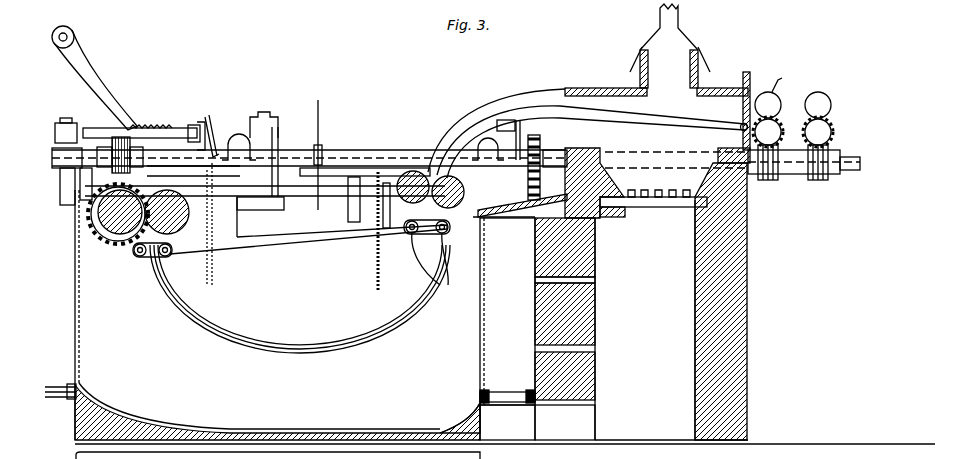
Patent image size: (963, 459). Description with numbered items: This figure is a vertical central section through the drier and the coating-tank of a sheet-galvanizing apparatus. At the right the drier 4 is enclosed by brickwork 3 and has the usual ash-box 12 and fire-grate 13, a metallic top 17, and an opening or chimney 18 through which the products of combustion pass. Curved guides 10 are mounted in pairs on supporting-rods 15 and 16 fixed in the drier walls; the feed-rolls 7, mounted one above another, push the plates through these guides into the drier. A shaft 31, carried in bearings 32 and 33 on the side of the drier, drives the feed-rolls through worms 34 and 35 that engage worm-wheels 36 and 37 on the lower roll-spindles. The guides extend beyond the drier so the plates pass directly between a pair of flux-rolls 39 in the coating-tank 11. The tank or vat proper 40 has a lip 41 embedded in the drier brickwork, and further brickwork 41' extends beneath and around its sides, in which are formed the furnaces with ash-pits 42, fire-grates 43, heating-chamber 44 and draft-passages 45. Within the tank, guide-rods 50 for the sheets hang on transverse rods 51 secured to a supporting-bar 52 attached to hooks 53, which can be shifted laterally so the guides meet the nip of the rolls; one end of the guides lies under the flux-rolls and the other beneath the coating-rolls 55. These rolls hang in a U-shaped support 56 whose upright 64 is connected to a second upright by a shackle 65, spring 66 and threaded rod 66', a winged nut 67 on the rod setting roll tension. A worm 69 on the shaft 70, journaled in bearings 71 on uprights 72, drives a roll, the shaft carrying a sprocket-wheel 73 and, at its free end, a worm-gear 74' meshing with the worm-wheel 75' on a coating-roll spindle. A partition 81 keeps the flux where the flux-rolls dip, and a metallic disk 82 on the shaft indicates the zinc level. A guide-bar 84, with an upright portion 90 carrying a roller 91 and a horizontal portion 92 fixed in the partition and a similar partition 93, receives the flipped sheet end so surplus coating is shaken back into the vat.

The brickwork 3 is at (538, 258).
The drier 4 is at (776, 325).
The feed-rolls 7 is at (815, 102).
The guides 10 is at (657, 122).
The coating-tank 11 is at (490, 324).
The ash-box 12 is at (671, 320).
The fire-grate 13 is at (655, 202).
The supporting-rod 15 is at (584, 112).
The supporting-rod 16 is at (740, 125).
The metallic top 17 is at (735, 108).
The opening or chimney 18 is at (670, 46).
The shaft 31 is at (850, 175).
The bearing 32 is at (546, 162).
The bearing 33 is at (789, 165).
The worm 34 is at (824, 178).
The worm 35 is at (758, 197).
The worm-wheel 36 is at (832, 129).
The worm-wheel 37 is at (765, 125).
The flux-rolls 39 is at (410, 168).
The tank or vat proper 40 is at (81, 354).
The lip 41 is at (609, 109).
The brickwork 41' is at (527, 358).
The ash-pits 42 is at (537, 422).
The fire-grates 43 is at (501, 391).
The heating-chamber 44 is at (507, 311).
The draft-passages 45 is at (580, 283).
The guide-rods 50 is at (280, 346).
The transverse rods 51 is at (170, 256).
The supporting-bar 52 is at (312, 245).
The hooks 53 is at (231, 224).
The coating-rolls 55 is at (128, 240).
The U-shaped support 56 is at (232, 246).
The upright 64 is at (108, 132).
The shackle 65 is at (135, 126).
The spring 66 is at (151, 114).
The threaded rod 66' is at (189, 129).
The winged nut 67 is at (207, 115).
The worm 69 is at (467, 140).
The shaft 70 is at (322, 158).
The bearings 71 is at (255, 150).
The uprights 72 is at (264, 116).
The sprocket-wheel 73 is at (534, 133).
The worm-gear 74' is at (66, 146).
The worm-wheel 75' is at (116, 231).
The partition 81 is at (376, 260).
The metallic disk 82 is at (321, 128).
The guide-bar 84 is at (160, 188).
The upright portion 90 is at (85, 69).
The roller 91 is at (73, 27).
The horizontal portion 92 is at (282, 175).
The partition 93 is at (210, 288).